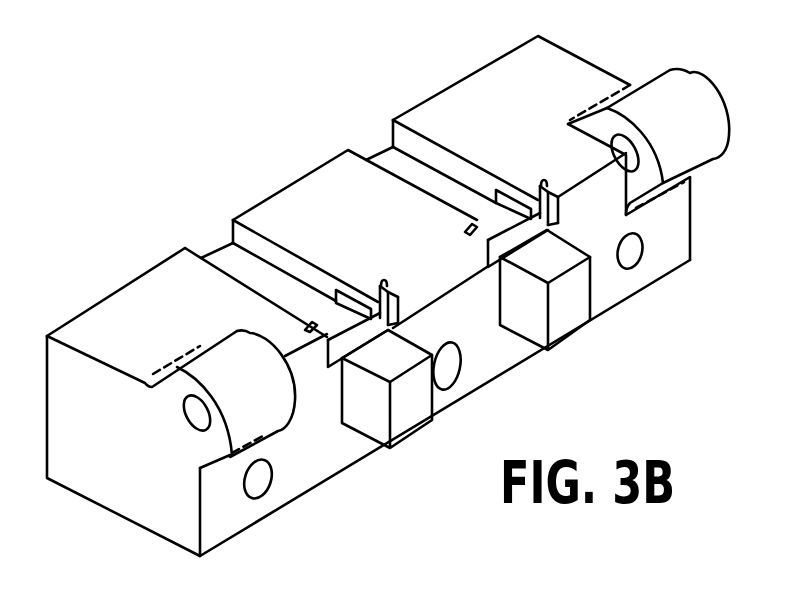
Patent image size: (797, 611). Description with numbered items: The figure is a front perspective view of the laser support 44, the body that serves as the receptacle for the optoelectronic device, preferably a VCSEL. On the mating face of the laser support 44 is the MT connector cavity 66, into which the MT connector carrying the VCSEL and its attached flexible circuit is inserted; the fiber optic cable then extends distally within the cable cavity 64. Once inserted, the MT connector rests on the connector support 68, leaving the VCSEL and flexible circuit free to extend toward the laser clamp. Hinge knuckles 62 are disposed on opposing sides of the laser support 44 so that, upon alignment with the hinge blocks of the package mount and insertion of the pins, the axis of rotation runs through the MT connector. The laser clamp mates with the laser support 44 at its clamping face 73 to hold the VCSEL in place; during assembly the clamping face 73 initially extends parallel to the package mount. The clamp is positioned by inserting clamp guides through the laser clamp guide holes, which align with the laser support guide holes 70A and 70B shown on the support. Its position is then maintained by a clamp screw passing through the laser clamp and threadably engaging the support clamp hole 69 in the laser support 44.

The laser support 44 is at (690, 257).
The hinge knuckle 62 is at (267, 405).
The cable cavity 64 is at (262, 270).
The MT connector cavity 66 is at (347, 345).
The connector support 68 is at (373, 418).
The support clamp hole 69 is at (449, 376).
The laser support guide hole 70A is at (632, 270).
The laser support guide hole 70B is at (263, 500).
The clamping face 73 is at (497, 355).